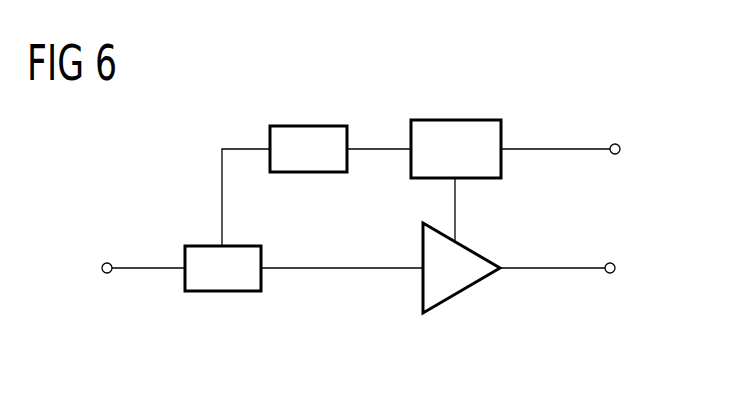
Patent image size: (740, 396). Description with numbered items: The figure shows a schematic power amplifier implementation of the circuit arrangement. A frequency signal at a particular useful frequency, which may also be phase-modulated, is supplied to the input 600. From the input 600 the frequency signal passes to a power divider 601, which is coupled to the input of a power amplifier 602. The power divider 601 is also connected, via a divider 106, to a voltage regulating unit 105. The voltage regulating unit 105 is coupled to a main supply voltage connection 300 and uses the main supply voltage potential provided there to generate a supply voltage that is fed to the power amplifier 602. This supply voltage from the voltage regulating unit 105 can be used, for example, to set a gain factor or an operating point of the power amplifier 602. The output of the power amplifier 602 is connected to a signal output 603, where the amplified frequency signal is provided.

The divider 106 is at (307, 124).
The voltage regulating unit 105 is at (453, 119).
The power divider 601 is at (222, 292).
The power amplifier 602 is at (466, 287).
The input 600 is at (101, 267).
The signal output 603 is at (616, 268).
The main supply voltage connection 300 is at (621, 149).